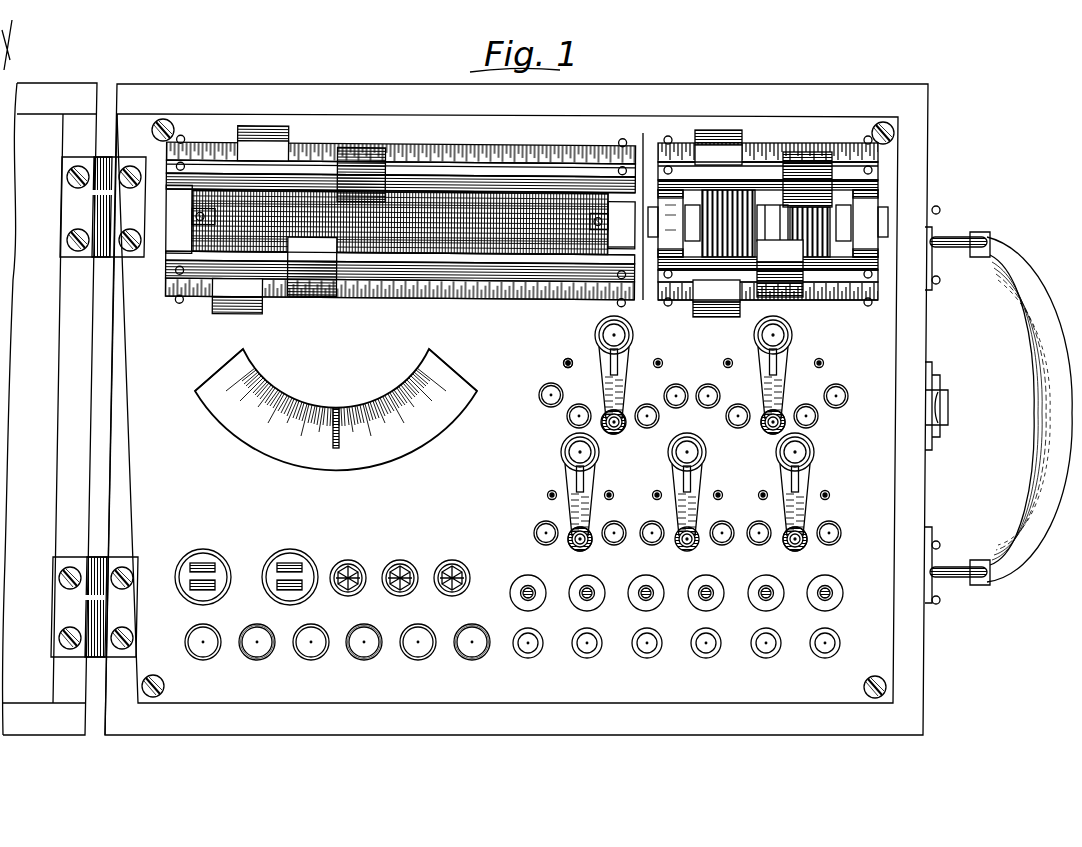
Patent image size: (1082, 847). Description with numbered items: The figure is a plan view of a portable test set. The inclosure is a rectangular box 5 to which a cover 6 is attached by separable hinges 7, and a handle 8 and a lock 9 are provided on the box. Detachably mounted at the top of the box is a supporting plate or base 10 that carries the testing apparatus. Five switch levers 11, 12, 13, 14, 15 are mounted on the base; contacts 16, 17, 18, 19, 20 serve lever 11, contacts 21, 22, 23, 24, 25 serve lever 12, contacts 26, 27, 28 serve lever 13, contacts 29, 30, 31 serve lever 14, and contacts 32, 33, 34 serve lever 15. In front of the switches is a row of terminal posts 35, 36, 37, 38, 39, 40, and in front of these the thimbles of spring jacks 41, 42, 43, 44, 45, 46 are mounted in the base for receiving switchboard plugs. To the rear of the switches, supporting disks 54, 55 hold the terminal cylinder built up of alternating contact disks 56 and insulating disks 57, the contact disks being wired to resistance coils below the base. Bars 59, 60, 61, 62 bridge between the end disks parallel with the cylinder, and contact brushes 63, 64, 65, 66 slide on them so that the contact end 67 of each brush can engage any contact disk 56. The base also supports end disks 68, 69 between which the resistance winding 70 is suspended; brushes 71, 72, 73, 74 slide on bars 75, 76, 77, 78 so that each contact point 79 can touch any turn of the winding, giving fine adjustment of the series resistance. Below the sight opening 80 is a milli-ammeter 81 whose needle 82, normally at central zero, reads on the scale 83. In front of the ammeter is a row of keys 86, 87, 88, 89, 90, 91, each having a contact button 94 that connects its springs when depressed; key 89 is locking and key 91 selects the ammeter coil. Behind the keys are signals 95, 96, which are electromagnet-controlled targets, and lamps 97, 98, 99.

The rectangular box 5 is at (907, 665).
The cover 6 is at (50, 125).
The separable hinges 7 is at (113, 207).
The handle 8 is at (1030, 333).
The lock 9 is at (940, 405).
The supporting plate or base 10 is at (885, 337).
The switch lever 11 is at (621, 380).
The switch lever 12 is at (779, 378).
The switch lever 13 is at (588, 475).
The switch lever 14 is at (693, 478).
The switch lever 15 is at (801, 478).
The contact 16 is at (546, 392).
The contact 17 is at (581, 405).
The contact 18 is at (613, 430).
The contact 19 is at (650, 426).
The contact 20 is at (680, 406).
The contact 21 is at (845, 401).
The contact 22 is at (816, 419).
The contact 23 is at (771, 431).
The contact 24 is at (738, 428).
The contact 25 is at (708, 408).
The contact 26 is at (548, 544).
The contact 27 is at (581, 547).
The contact 28 is at (613, 544).
The contact 29 is at (653, 544).
The contact 30 is at (570, 367).
The contact 31 is at (567, 419).
The contact 32 is at (763, 544).
The contact 33 is at (806, 545).
The contact 34 is at (841, 535).
The terminal post 35 is at (535, 598).
The terminal post 36 is at (594, 598).
The terminal post 37 is at (653, 598).
The terminal post 38 is at (712, 598).
The terminal post 39 is at (773, 598).
The terminal post 40 is at (832, 600).
The spring jack 41 is at (528, 652).
The spring jack 42 is at (587, 652).
The spring jack 43 is at (647, 654).
The spring jack 44 is at (706, 654).
The spring jack 45 is at (766, 654).
The spring jack 46 is at (825, 654).
The supporting disk 54 is at (663, 200).
The supporting disk 55 is at (868, 200).
The contact disks 56 is at (740, 190).
The insulating disks 57 is at (748, 190).
The bar 59 is at (858, 300).
The bar 60 is at (870, 264).
The bar 61 is at (872, 170).
The bar 62 is at (867, 158).
The contact brush 63 is at (703, 310).
The contact brush 64 is at (792, 291).
The contact brush 65 is at (820, 165).
The contact brush 66 is at (710, 140).
The contact point or end 67 is at (722, 254).
The end disk 68 is at (177, 237).
The end disk 69 is at (625, 249).
The resistance coil or winding 70 is at (487, 190).
The brush 71 is at (222, 306).
The brush 72 is at (307, 290).
The brush 73 is at (266, 127).
The brush 74 is at (373, 152).
The bar 75 is at (442, 294).
The bar 76 is at (493, 262).
The bar 77 is at (450, 167).
The bar 78 is at (500, 148).
The contact point 79 is at (263, 187).
The sight opening 80 is at (470, 385).
The milli-ammeter 81 is at (450, 373).
The needle 82 is at (340, 420).
The scale 83 is at (415, 442).
The key 86 is at (186, 646).
The key 87 is at (252, 655).
The key 88 is at (306, 655).
The key 89 is at (361, 655).
The key 90 is at (414, 655).
The key 91 is at (466, 655).
The contact button 94 is at (244, 630).
The signal 95 is at (220, 567).
The signal 96 is at (295, 560).
The signal 97 is at (360, 565).
The signal 98 is at (412, 565).
The signal 99 is at (462, 565).